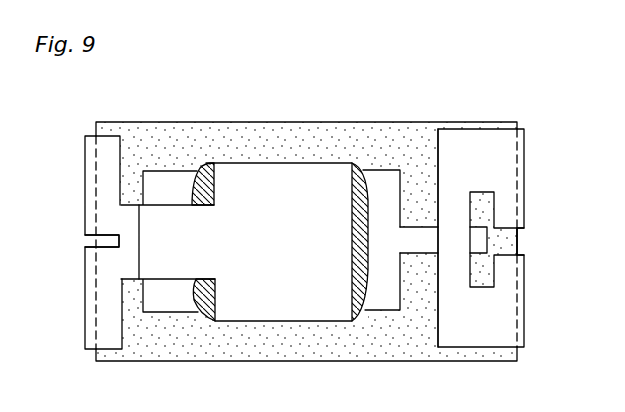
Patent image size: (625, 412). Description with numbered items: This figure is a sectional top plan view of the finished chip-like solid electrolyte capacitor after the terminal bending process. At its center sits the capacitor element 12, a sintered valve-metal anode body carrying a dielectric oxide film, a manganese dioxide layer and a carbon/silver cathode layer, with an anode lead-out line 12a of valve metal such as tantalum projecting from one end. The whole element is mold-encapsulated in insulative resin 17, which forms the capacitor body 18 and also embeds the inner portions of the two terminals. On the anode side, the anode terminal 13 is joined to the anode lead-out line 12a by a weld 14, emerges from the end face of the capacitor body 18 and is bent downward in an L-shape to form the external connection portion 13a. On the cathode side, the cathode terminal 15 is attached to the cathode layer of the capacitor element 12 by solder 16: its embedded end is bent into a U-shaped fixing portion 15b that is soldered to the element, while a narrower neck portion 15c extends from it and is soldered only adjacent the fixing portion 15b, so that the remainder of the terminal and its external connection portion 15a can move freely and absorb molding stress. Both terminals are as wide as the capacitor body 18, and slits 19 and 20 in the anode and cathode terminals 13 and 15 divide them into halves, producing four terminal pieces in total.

The capacitor element 12 is at (385, 298).
The anode lead-out line 12a is at (478, 244).
The anode terminal 13 is at (527, 133).
The external connection portion 13a is at (526, 301).
The weld 14 is at (462, 237).
The cathode terminal 15 is at (82, 324).
The external connection portion 15a is at (85, 182).
The fixing portion 15b is at (260, 180).
The neck portion 15c is at (172, 217).
The solder 16 is at (202, 298).
The insulative resin 17 is at (420, 140).
The capacitor body 18 is at (340, 119).
The slit 19 is at (524, 243).
The slit 20 is at (86, 241).